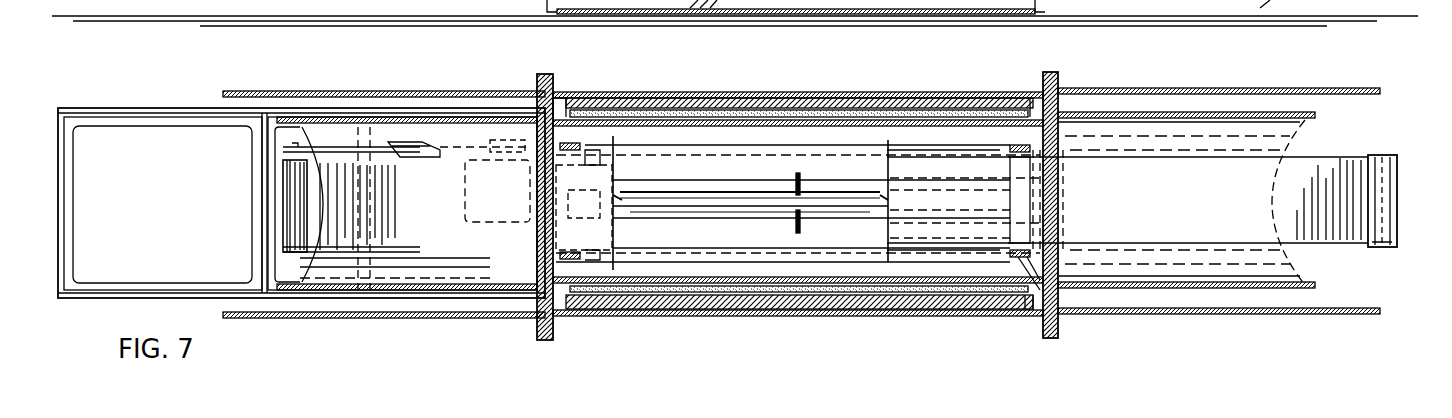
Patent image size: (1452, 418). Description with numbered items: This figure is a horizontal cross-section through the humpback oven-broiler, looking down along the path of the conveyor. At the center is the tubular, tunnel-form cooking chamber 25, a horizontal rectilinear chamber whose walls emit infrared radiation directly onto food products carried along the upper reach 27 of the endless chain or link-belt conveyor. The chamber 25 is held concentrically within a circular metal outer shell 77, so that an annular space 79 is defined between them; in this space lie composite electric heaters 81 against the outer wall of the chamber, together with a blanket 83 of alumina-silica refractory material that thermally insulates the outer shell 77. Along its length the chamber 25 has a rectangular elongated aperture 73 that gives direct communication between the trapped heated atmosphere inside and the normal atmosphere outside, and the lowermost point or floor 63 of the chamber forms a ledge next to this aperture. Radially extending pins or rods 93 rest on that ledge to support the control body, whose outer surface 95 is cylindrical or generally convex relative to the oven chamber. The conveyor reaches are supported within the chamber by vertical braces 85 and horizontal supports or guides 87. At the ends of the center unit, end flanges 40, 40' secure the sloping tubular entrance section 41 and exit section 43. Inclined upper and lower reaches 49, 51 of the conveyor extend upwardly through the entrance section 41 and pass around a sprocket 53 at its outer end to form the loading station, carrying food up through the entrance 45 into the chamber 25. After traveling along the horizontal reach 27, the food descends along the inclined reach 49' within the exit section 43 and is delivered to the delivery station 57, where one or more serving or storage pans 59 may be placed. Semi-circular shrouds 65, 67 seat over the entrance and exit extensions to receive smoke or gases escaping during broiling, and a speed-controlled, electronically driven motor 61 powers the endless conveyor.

The delivery station 57 is at (118, 95).
The serving or storage pan 59 is at (152, 118).
The inclined reach 49' is at (331, 165).
The semi-circular shroud 67 is at (262, 90).
The exit section 43 is at (318, 118).
The motor 61 is at (462, 155).
The horizontal supports or guides 87 is at (560, 145).
The end flange 40' is at (524, 188).
The vertical braces 85 is at (578, 145).
The upper reach 27 is at (595, 160).
The outer shell 77 is at (693, 92).
The blanket of refractory material 83 is at (738, 103).
The composite electric heaters 81 is at (813, 183).
The floor 63 is at (833, 185).
The rectangular elongated aperture 73 is at (855, 120).
The cooking chamber 25 is at (930, 92).
The annular space 79 is at (1039, 98).
The end flange 40 is at (1095, 51).
The semi-circular shroud 65 is at (1127, 90).
The entrance section 41 is at (1160, 113).
The inclined upper reach 49 is at (1188, 144).
The entrance 45 is at (1297, 127).
The inclined lower reach 51 is at (1353, 155).
The sprocket 53 is at (1378, 247).
The radially extending pins or rods 93 is at (800, 235).
The outer surface 95 is at (707, 217).